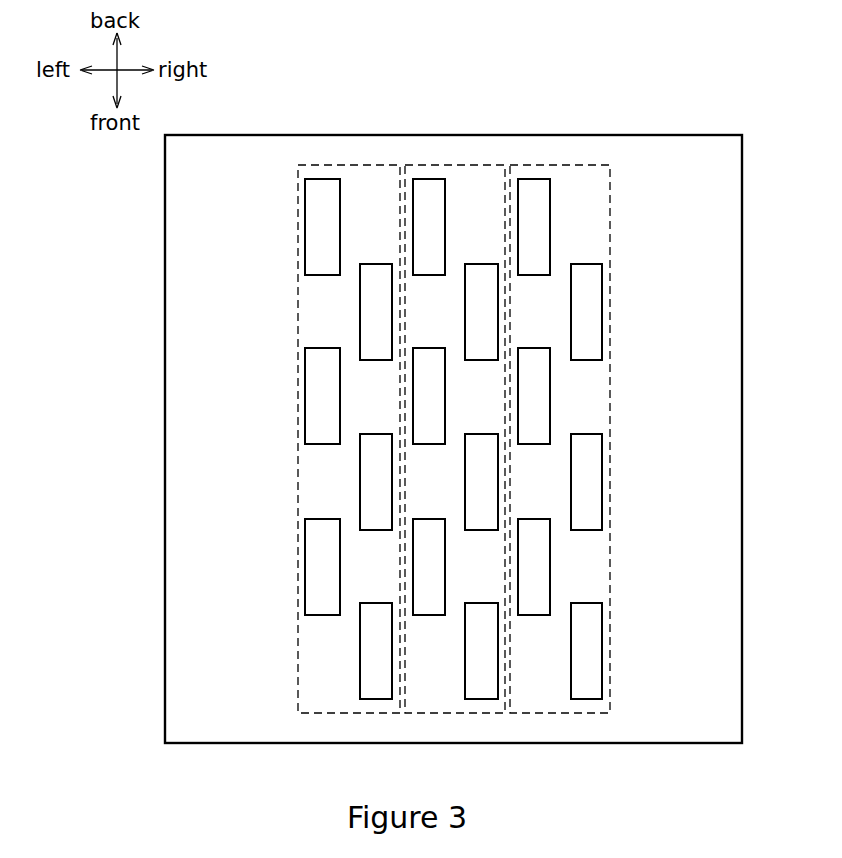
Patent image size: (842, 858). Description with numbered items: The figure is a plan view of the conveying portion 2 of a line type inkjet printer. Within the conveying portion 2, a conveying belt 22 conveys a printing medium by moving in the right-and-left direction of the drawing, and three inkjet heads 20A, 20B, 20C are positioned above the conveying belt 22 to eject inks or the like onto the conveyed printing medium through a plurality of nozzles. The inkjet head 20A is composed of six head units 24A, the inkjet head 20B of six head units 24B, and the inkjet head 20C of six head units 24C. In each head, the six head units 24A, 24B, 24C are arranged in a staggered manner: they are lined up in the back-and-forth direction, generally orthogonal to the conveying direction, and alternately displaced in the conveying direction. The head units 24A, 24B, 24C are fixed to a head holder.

The conveying portion 2 is at (689, 128).
The conveying belt 22 is at (233, 156).
The inkjet head 20A is at (347, 163).
The inkjet head 20B is at (453, 163).
The inkjet head 20C is at (558, 163).
The head units 24A is at (305, 227).
The head units 24B is at (480, 264).
The head units 24C is at (550, 222).